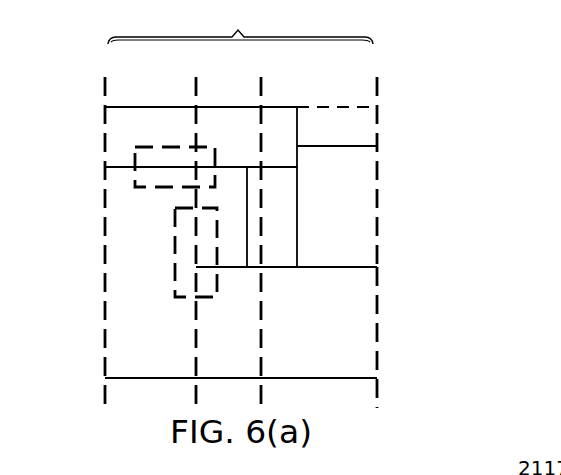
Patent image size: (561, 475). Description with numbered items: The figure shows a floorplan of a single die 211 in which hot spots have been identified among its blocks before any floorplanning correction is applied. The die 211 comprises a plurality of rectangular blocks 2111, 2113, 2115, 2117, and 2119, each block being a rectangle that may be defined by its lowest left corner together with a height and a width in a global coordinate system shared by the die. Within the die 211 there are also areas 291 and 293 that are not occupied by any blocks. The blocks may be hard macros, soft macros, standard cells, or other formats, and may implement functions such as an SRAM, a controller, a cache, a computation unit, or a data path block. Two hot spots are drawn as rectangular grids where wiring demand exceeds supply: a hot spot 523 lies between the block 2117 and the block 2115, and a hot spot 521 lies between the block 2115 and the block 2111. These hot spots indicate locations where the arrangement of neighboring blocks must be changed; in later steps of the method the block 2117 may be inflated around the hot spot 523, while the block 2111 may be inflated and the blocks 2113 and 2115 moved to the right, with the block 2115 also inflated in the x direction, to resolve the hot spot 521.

The die 211 is at (240, 23).
The block 2117 is at (158, 112).
The area not occupied by any blocks 293 is at (338, 112).
The block 2115 is at (233, 172).
The block 2119 is at (370, 192).
The block 2113 is at (370, 340).
The block 2111 is at (112, 268).
The area not occupied by any blocks 291 is at (280, 260).
The hot spot 523 is at (140, 190).
The hot spot 521 is at (185, 300).